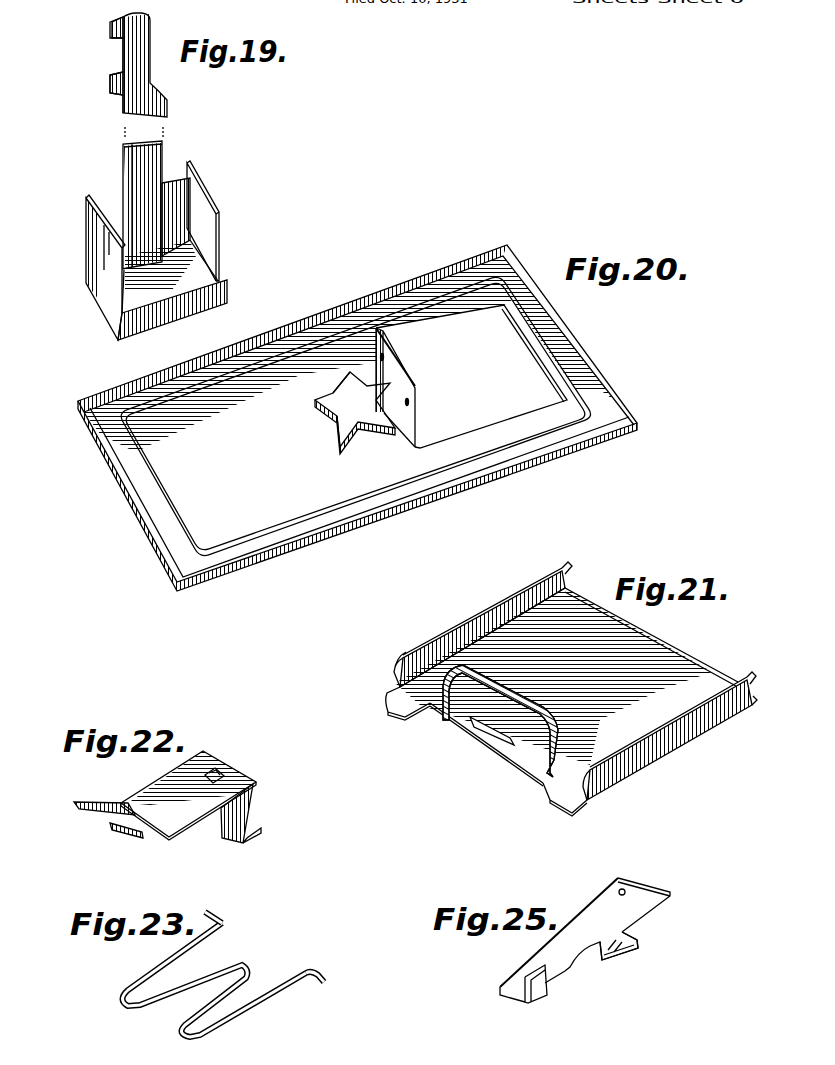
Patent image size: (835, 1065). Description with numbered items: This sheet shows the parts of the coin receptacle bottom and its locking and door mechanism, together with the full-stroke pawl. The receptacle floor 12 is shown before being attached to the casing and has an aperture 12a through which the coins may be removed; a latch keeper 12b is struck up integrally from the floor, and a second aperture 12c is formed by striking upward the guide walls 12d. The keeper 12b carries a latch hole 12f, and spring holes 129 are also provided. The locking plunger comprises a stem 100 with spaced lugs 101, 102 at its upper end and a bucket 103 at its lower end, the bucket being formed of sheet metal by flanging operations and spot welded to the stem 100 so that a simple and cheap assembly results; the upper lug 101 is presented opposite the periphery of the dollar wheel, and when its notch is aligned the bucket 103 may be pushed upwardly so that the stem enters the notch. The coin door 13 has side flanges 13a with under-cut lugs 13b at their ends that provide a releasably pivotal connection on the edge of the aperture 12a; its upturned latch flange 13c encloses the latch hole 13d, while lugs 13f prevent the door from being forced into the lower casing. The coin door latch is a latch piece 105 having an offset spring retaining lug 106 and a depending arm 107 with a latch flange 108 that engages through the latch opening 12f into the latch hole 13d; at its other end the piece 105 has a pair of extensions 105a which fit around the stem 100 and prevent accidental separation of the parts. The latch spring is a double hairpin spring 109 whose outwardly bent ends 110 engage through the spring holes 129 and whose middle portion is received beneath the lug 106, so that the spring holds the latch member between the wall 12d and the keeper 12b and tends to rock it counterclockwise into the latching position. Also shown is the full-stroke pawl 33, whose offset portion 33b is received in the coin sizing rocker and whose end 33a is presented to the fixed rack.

In FIG. 19, the stem 100 is at (160, 153).
In FIG. 19, the upper lug 101 is at (109, 30).
In FIG. 19, the lower lug 102 is at (110, 86).
In FIG. 19, the bucket 103 is at (203, 253).
In FIG. 20, the floor 12 is at (293, 513).
In FIG. 20, the aperture 12a is at (507, 403).
In FIG. 20, the latch keeper 12b is at (400, 369).
In FIG. 20, the second aperture 12c is at (348, 403).
In FIG. 20, the guide walls 12d is at (335, 386).
In FIG. 20, the latch hole 12f is at (402, 410).
In FIG. 20, the spring holes 129 is at (385, 357).
In FIG. 21, the door 13 is at (630, 641).
In FIG. 21, the side flanges 13a is at (462, 612).
In FIG. 21, the under-cut lugs 13b is at (585, 550).
In FIG. 21, the upturned latch flange 13c is at (465, 693).
In FIG. 21, the latch hole 13d is at (497, 733).
In FIG. 21, the lugs 13f is at (398, 698).
In FIG. 22, the latch piece 105 is at (183, 813).
In FIG. 22, the extensions 105a is at (80, 810).
In FIG. 22, the spring retaining lug 106 is at (214, 771).
In FIG. 22, the depending arm 107 is at (248, 808).
In FIG. 22, the latch flange 108 is at (255, 836).
In FIG. 23, the double hairpin spring 109 is at (237, 963).
In FIG. 23, the outwardly bent ends 110 is at (212, 913).
In FIG. 25, the full-stroke pawl 33 is at (606, 898).
In FIG. 25, the end 33a is at (540, 988).
In FIG. 25, the offset portion 33b is at (628, 940).